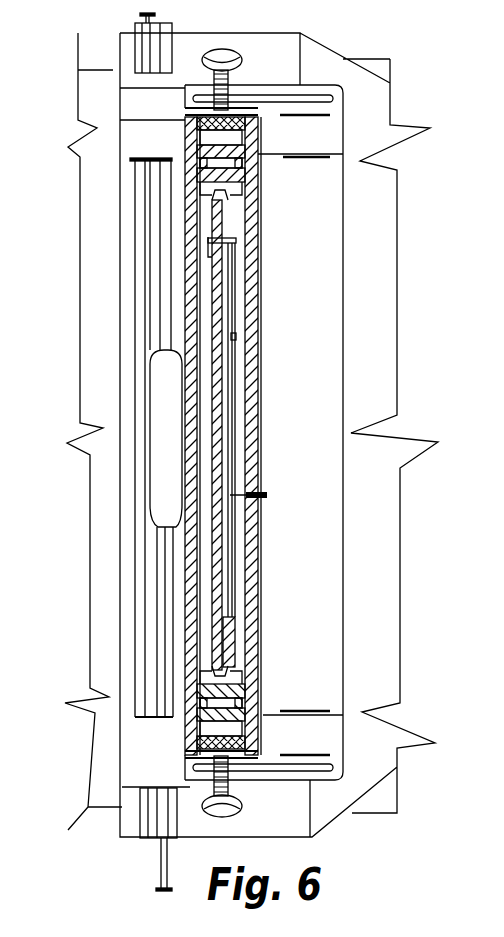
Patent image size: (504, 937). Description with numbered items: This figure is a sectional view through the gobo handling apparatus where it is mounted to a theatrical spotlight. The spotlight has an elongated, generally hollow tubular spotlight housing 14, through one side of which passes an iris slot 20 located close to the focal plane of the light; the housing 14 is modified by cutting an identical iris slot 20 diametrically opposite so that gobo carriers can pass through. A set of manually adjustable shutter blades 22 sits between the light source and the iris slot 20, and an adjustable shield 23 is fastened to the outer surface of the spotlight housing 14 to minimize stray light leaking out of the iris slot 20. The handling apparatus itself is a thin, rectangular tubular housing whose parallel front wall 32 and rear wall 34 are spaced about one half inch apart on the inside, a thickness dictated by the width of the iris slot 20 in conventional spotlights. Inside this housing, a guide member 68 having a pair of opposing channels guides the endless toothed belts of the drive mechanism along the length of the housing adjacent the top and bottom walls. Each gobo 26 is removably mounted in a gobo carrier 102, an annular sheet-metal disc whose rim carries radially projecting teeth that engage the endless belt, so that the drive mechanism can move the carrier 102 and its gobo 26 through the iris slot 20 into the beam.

The spotlight housing 14 is at (406, 51).
The iris slot 20 is at (238, 512).
The shutter blades 22 is at (62, 345).
The adjustable shield 23 is at (345, 328).
The gobo 26 is at (215, 552).
The front wall 32 is at (252, 283).
The rear wall 34 is at (190, 250).
The guide member 68 is at (256, 152).
The gobo carrier 102 is at (267, 495).